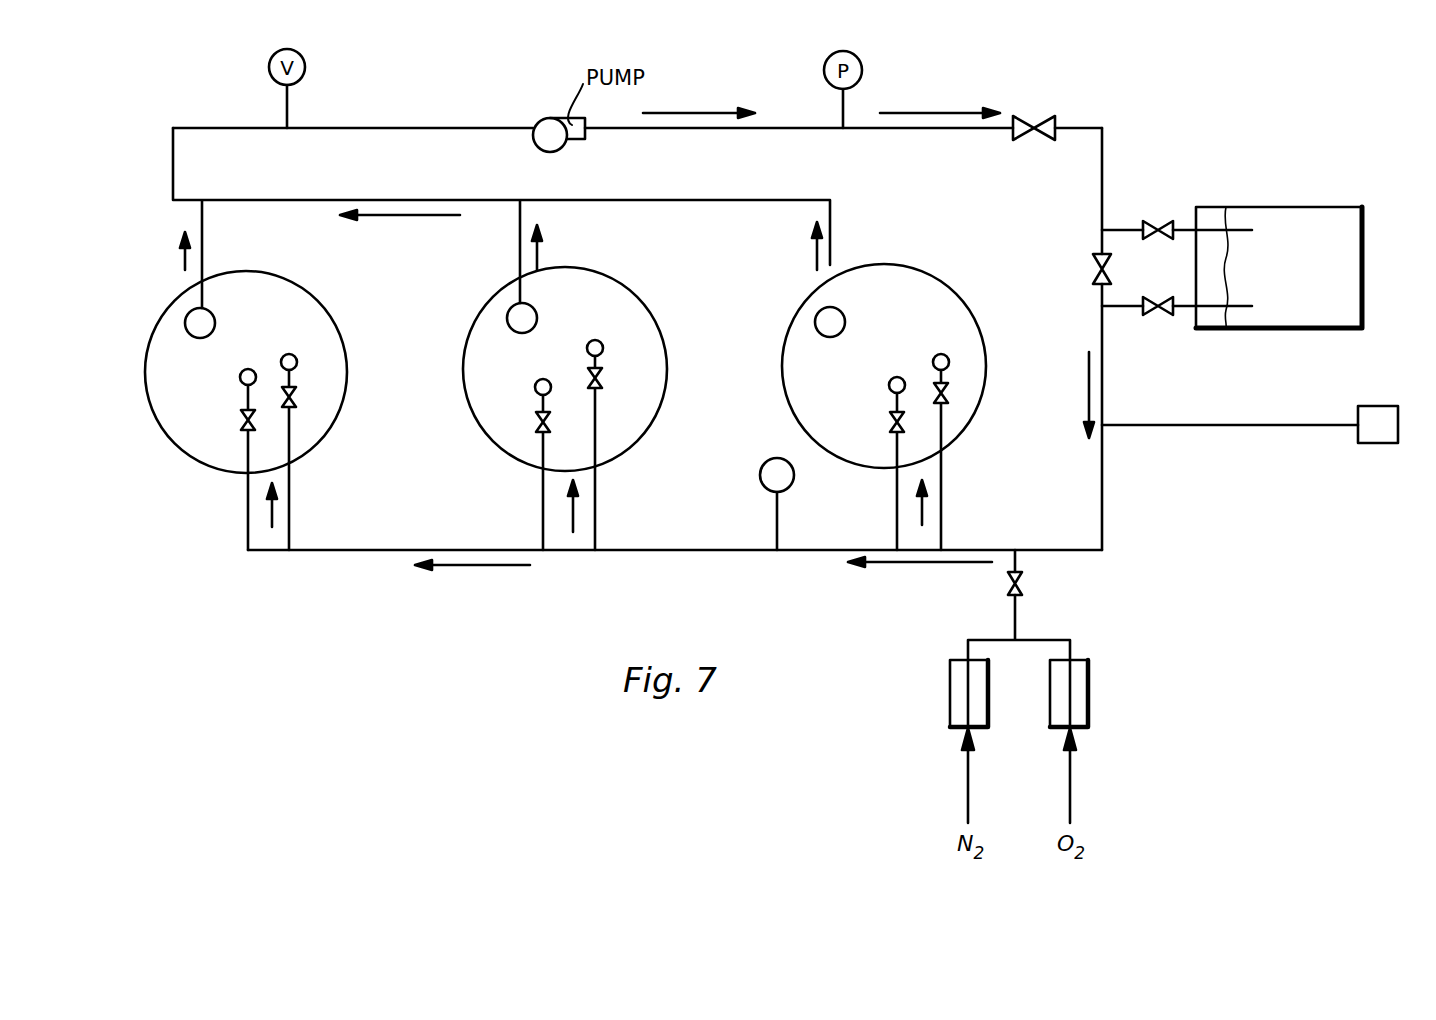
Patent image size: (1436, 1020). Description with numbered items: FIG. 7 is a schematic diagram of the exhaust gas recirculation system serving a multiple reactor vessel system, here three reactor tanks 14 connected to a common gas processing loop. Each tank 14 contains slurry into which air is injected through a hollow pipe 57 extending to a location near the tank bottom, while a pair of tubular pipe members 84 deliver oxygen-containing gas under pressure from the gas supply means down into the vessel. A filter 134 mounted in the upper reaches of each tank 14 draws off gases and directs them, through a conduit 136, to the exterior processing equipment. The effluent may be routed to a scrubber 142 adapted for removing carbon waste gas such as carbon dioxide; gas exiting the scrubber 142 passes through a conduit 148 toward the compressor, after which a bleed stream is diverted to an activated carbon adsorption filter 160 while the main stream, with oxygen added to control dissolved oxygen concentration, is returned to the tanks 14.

The tank 14 is at (336, 428).
The hollow pipe 57 is at (247, 518).
The tubular pipe members 84 is at (290, 512).
The filter 134 is at (215, 321).
The conduit 136 is at (370, 200).
The scrubber 142 is at (1338, 287).
The conduit 148 is at (1104, 407).
The activated carbon adsorption filter 160 is at (1378, 405).